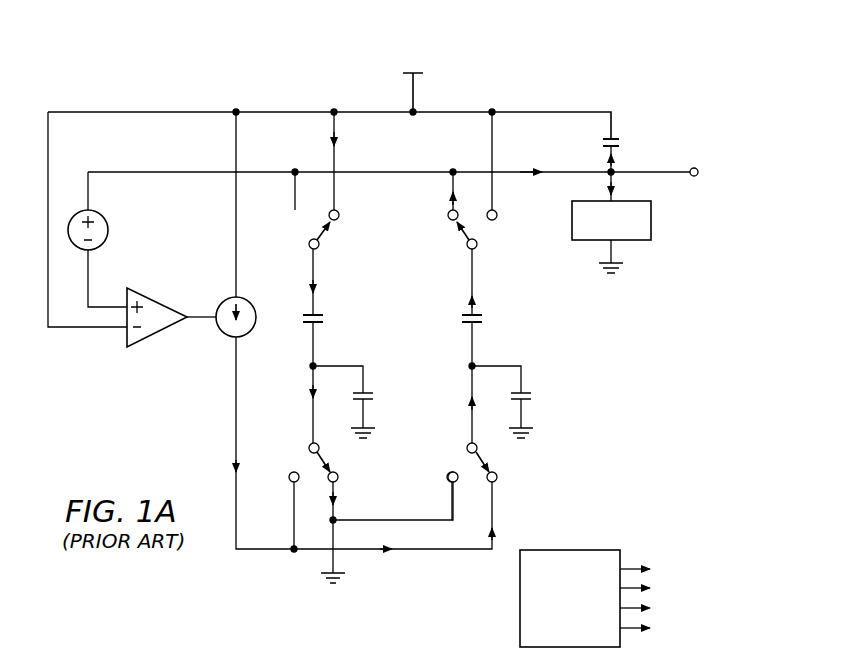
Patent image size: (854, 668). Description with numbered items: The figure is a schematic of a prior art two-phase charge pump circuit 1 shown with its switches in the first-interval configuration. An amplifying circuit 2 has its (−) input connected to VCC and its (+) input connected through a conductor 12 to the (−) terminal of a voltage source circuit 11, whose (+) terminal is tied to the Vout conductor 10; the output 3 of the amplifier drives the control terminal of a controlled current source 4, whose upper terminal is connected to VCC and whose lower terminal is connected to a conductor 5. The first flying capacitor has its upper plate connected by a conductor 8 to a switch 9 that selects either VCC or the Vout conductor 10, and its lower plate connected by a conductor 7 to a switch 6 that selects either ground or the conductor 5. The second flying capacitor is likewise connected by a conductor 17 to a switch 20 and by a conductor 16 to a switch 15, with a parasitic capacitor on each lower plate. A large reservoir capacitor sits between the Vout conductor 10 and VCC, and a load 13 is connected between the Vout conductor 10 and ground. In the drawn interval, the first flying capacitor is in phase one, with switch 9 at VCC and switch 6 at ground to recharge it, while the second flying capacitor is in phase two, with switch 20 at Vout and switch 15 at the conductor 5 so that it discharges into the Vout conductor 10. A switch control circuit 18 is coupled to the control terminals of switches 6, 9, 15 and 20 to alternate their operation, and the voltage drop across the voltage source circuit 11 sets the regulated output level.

The charge pump circuit 1 is at (256, 84).
The amplifying circuit 2 is at (150, 297).
The output 3 is at (200, 312).
The controlled current source 4 is at (219, 335).
The conductor 5 is at (236, 436).
The switch 6 is at (350, 466).
The conductor 7 is at (313, 345).
The conductor 8 is at (313, 282).
The switch 9 is at (355, 239).
The conductor 10 is at (172, 171).
The voltage source circuit 11 is at (109, 228).
The conductor 12 is at (88, 276).
The load 13 is at (628, 241).
The switch 15 is at (509, 465).
The conductor 16 is at (472, 345).
The conductor 17 is at (472, 282).
The switch control circuit 18 is at (520, 600).
The switch 20 is at (514, 239).